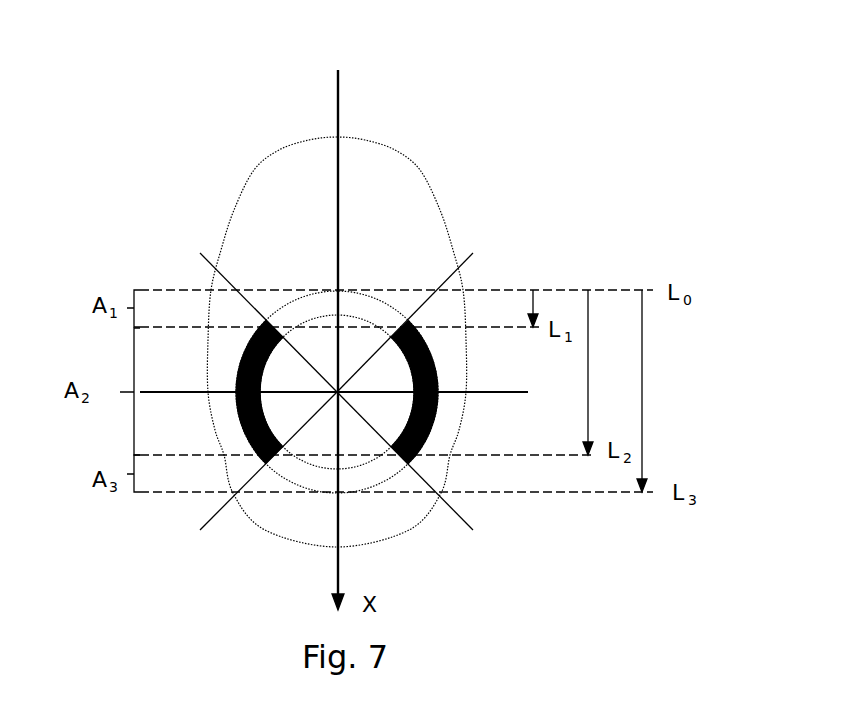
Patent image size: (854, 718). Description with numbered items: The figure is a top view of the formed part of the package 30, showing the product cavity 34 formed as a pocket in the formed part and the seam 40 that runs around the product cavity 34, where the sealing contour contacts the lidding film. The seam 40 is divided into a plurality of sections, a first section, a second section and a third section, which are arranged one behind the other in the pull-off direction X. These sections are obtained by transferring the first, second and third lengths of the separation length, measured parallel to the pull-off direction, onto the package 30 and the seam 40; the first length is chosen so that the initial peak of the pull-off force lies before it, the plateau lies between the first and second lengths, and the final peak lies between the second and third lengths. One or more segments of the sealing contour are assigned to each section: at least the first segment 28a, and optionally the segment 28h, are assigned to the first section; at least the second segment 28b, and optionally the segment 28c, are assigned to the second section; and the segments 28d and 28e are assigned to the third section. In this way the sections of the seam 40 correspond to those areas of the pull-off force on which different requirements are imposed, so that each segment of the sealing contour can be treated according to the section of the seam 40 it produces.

The package 30 is at (257, 135).
The product cavity 34 is at (358, 365).
The seam 40 is at (280, 307).
The first segment 28a is at (407, 241).
The second segment 28b is at (487, 375).
The segment 28c is at (479, 437).
The segment 28d is at (381, 517).
The segment 28e is at (295, 517).
The segment 28h is at (277, 240).